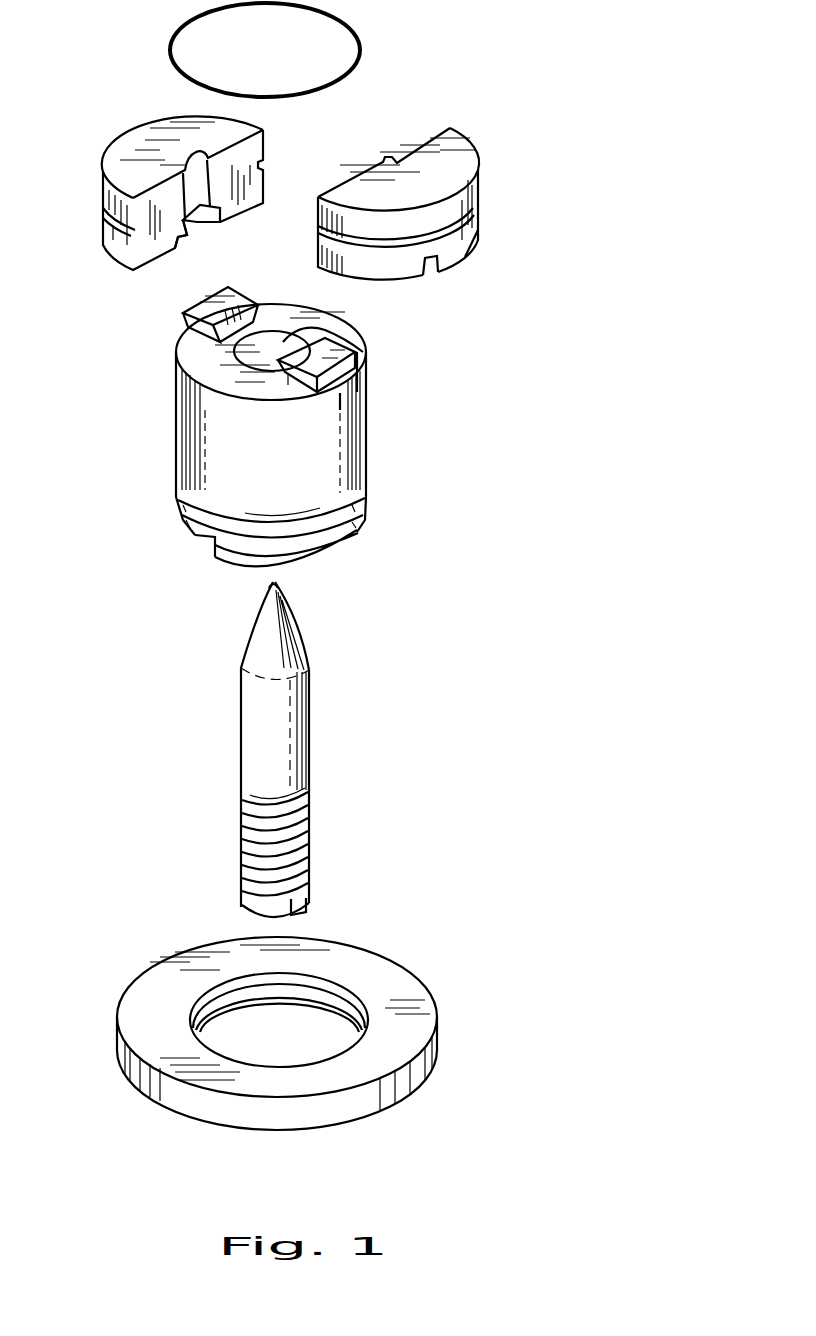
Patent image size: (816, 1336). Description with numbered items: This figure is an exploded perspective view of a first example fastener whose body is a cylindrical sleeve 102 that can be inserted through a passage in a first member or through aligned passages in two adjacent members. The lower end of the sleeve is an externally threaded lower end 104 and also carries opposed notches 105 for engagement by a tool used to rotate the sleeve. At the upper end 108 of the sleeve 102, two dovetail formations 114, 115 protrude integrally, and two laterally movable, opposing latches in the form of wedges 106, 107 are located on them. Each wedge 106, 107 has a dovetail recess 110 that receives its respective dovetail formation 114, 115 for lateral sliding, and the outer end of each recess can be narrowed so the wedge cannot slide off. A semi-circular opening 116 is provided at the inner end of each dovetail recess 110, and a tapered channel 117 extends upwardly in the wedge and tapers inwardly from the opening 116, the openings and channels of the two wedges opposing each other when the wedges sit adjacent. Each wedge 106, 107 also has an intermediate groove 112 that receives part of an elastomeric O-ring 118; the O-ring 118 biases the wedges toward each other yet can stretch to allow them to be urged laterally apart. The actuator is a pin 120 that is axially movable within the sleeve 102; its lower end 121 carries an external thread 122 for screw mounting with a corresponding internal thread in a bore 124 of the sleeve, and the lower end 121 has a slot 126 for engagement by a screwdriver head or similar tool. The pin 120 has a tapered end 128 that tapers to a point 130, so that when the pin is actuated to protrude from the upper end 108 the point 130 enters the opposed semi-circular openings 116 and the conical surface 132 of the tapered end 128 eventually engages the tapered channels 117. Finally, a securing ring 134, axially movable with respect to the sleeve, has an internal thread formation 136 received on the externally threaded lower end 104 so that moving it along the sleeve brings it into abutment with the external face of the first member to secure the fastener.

The O-ring 118 is at (352, 32).
The wedge 106 is at (90, 160).
The wedge 107 is at (500, 175).
The tapered channel 117 is at (262, 150).
The semi-circular opening 116 is at (218, 216).
The dovetail recess 110 is at (196, 237).
The intermediate groove 112 is at (130, 228).
The dovetail formation 114 is at (180, 312).
The bore 124 is at (296, 345).
The upper end of the sleeve 108 is at (193, 357).
The dovetail formation 115 is at (343, 395).
The cylindrical sleeve 102 is at (389, 465).
The externally threaded lower end 104 is at (367, 527).
The notch 105 is at (199, 555).
The point 130 is at (278, 580).
The tapered end 128 is at (238, 621).
The conical surface 132 is at (293, 637).
The pin 120 is at (319, 708).
The external thread 122 is at (245, 820).
The lower end of the pin 121 is at (328, 834).
The slot 126 is at (294, 910).
The securing ring 134 is at (453, 987).
The internal thread formation 136 is at (230, 1005).